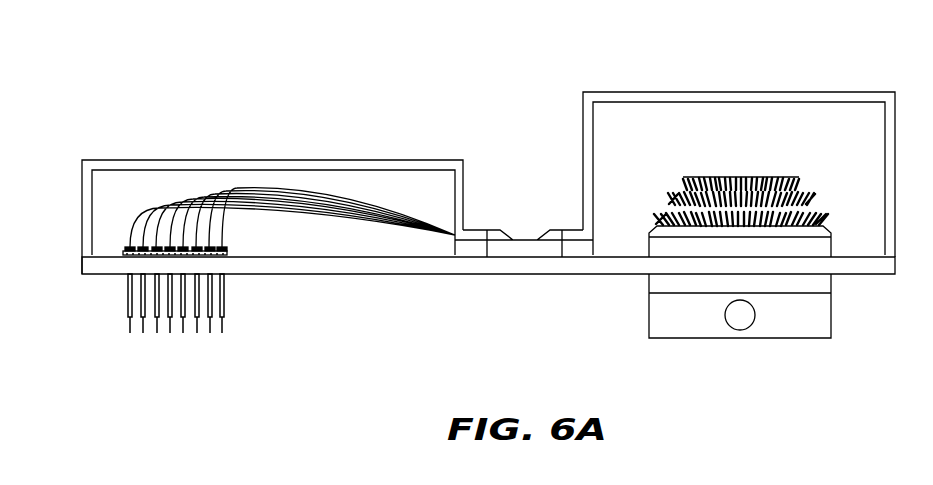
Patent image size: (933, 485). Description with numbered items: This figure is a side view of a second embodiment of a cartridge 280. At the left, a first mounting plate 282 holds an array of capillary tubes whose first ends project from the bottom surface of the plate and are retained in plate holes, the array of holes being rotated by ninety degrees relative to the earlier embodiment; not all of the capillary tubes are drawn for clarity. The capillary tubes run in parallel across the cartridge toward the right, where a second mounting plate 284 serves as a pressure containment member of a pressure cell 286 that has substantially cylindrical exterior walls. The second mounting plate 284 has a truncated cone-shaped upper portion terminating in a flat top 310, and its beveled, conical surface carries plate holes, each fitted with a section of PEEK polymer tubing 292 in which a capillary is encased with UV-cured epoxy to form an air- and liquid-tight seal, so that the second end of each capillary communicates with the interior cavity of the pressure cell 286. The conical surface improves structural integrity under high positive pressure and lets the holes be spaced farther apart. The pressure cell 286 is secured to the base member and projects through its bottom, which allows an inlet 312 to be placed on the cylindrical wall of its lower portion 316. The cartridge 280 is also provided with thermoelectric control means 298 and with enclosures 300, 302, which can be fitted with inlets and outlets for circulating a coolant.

The cartridge 280 is at (53, 106).
The first mounting plate 282 is at (232, 277).
The second mounting plate 284 is at (687, 231).
The pressure cell 286 is at (807, 163).
The PEEK polymer tubing 292 is at (653, 217).
The thermoelectric control means 298 is at (482, 228).
The enclosure 300 is at (168, 158).
The enclosure 302 is at (605, 90).
The flat top 310 is at (715, 177).
The inlet 312 is at (742, 318).
The lower portion 316 is at (823, 302).